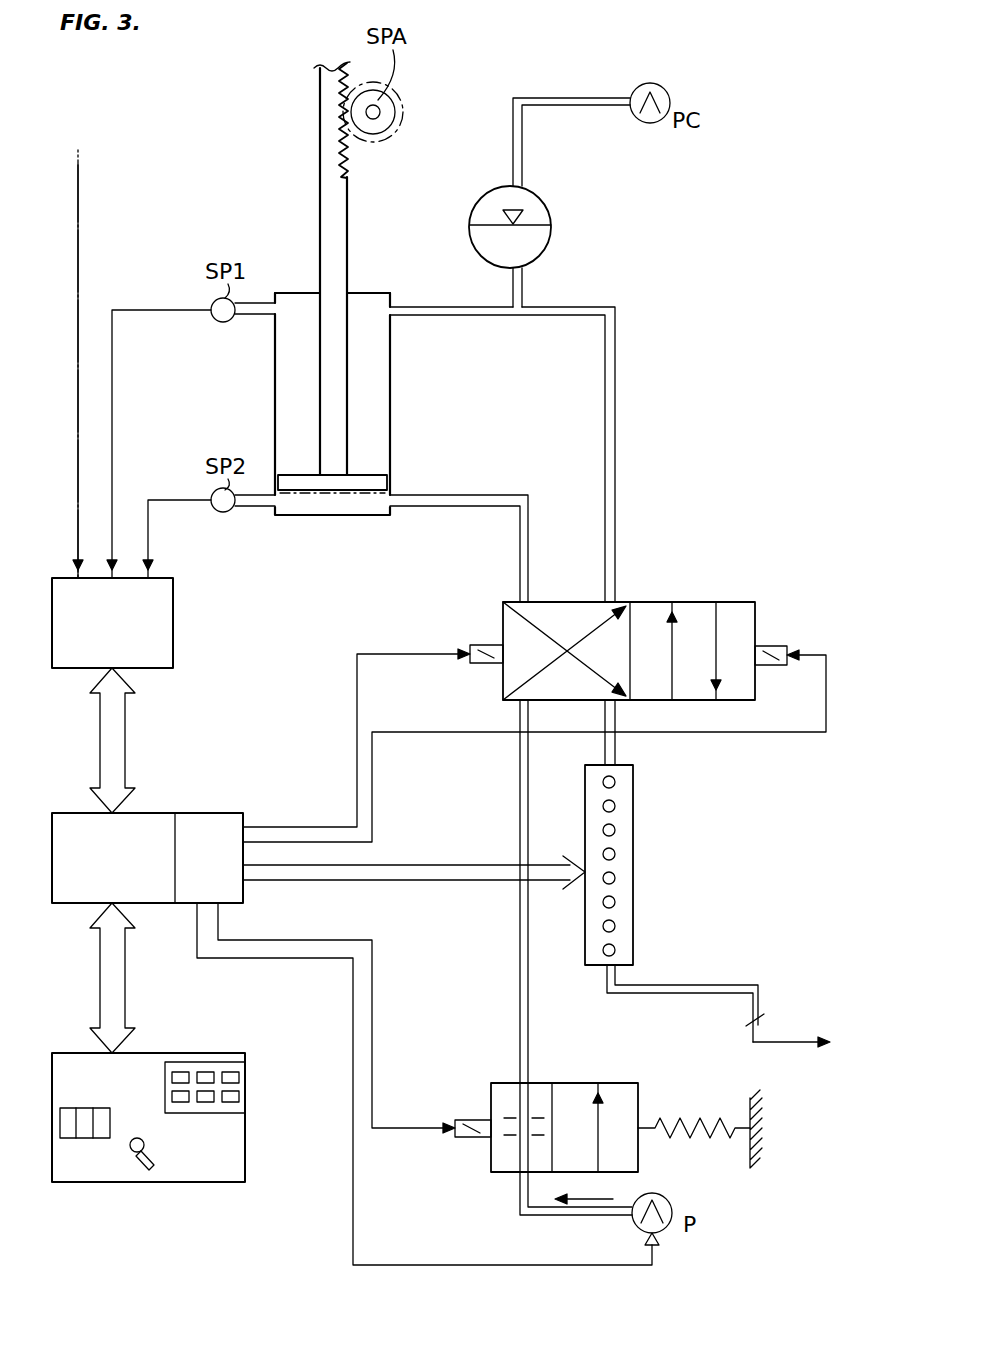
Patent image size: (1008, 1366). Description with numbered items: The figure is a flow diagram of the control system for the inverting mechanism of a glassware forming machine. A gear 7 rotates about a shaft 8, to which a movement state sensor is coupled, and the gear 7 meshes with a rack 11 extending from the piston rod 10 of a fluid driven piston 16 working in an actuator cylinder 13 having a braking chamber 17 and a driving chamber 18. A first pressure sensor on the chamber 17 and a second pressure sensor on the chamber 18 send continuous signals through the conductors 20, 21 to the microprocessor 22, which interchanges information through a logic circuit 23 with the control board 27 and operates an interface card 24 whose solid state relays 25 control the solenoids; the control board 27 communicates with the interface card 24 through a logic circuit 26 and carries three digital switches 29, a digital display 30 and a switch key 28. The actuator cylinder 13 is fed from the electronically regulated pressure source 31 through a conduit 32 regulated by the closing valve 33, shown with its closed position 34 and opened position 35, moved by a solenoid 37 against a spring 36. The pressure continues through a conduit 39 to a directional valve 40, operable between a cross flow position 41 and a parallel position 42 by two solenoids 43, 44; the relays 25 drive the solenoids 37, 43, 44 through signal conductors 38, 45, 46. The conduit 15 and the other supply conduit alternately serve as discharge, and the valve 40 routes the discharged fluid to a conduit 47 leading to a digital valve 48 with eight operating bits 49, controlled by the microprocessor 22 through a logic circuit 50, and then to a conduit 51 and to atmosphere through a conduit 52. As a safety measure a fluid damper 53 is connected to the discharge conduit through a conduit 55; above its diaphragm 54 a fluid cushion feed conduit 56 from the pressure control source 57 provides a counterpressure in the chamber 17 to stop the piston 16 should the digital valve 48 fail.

The gear 7 is at (392, 124).
The shaft 8 is at (380, 110).
The piston rod 10 is at (335, 228).
The rack 11 is at (352, 166).
The actuator cylinder 13 is at (392, 405).
The conduit 15 is at (452, 512).
The fluid driven piston 16 is at (372, 480).
The fluid chamber 17 is at (300, 404).
The fluid chamber 18 is at (330, 508).
The conductor 20 is at (165, 307).
The conductor 21 is at (148, 540).
The microprocessor 22 is at (112, 623).
The logic circuit 23 is at (125, 746).
The interface card 24 is at (147, 858).
The solid state relays 25 is at (194, 858).
The logic circuit 26 is at (125, 990).
The control board 27 is at (148, 1117).
The switch key 28 is at (148, 1183).
The digital switches 29 is at (90, 1140).
The digital display 30 is at (246, 1082).
The pressure source 31 is at (672, 1206).
The conduit 32 is at (570, 1216).
The closing valve 33 is at (582, 1082).
The closed position 34 is at (538, 1080).
The opened position 35 is at (616, 1088).
The spring 36 is at (694, 1120).
The solenoid 37 is at (460, 1140).
The signal conductor 38 is at (375, 1015).
The conduit 39 is at (515, 941).
The directional valve 40 is at (686, 602).
The cross flow position 41 is at (616, 604).
The parallel position 42 is at (705, 610).
The solenoid 43 is at (476, 645).
The solenoid 44 is at (780, 646).
The signal conductor 45 is at (373, 652).
The signal conductor 46 is at (436, 732).
The conduit 47 is at (620, 748).
The digital valve 48 is at (635, 869).
The operating bits 49 is at (615, 806).
The logic circuit 50 is at (458, 864).
The conduit 51 is at (683, 985).
The conduit 52 is at (793, 1040).
The fluid damper 53 is at (556, 224).
The diaphragm 54 is at (540, 229).
The conduit 55 is at (525, 294).
The fluid cushion feed conduit 56 is at (540, 98).
The pressure control source 57 is at (633, 94).